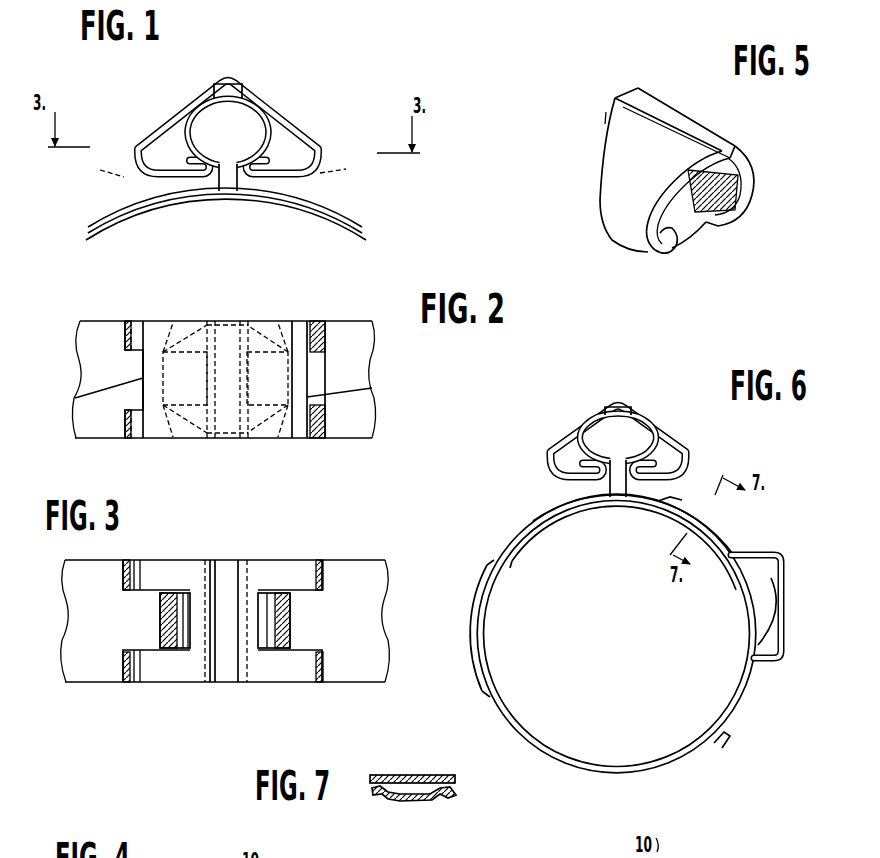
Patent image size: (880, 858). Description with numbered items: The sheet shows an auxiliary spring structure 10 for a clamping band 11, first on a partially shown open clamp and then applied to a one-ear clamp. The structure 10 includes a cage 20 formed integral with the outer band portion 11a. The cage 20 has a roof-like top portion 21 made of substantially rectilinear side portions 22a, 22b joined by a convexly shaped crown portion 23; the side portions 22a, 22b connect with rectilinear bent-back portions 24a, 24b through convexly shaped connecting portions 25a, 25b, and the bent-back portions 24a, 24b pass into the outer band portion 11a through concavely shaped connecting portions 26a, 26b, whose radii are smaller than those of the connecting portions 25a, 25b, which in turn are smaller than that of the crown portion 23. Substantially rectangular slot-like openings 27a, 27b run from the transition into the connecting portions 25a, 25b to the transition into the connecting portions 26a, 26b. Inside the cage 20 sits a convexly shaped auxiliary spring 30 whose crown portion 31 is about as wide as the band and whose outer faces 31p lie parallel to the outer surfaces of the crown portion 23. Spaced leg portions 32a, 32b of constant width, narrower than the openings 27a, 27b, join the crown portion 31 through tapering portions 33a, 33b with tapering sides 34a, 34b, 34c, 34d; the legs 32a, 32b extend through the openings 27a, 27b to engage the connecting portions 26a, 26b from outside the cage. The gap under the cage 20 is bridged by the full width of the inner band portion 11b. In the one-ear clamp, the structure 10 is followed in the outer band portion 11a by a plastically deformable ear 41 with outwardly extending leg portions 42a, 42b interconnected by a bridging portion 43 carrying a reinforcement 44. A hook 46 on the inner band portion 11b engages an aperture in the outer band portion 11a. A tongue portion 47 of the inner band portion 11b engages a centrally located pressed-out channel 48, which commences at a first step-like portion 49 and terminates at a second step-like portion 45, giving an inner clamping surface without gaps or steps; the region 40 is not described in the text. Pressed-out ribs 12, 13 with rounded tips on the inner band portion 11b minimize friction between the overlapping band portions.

In FIG. 1, the auxiliary spring structure 10 is at (294, 66).
In FIG. 6, the auxiliary spring structure 10 is at (673, 373).
In FIG. 6, the clamping band 11 is at (648, 767).
In FIG. 1, the outer band portion 11a is at (100, 213).
In FIG. 2, the outer band portion 11a is at (96, 347).
In FIG. 3, the outer band portion 11a is at (68, 615).
In FIG. 6, the outer band portion 11a is at (540, 497).
In FIG. 7, the outer band portion 11a is at (430, 750).
In FIG. 1, the inner band portion 11b is at (316, 221).
In FIG. 6, the inner band portion 11b is at (633, 503).
In FIG. 7, the inner band portion 11b is at (407, 802).
In FIG. 7, the pressed-out rib 12 is at (387, 797).
In FIG. 6, the pressed-out rib 13 is at (673, 493).
In FIG. 7, the pressed-out rib 13 is at (440, 797).
In FIG. 1, the cage 20 is at (304, 118).
In FIG. 6, the cage 20 is at (573, 422).
In FIG. 1, the roof-like top portion 21 is at (251, 67).
In FIG. 1, the rectilinear side portion 22a is at (171, 101).
In FIG. 2, the rectilinear side portion 22a is at (148, 328).
In FIG. 1, the rectilinear side portion 22b is at (289, 106).
In FIG. 2, the rectilinear side portion 22b is at (294, 328).
In FIG. 1, the crown portion 23 is at (247, 74).
In FIG. 1, the bent-back portion 24a is at (182, 197).
In FIG. 3, the bent-back portion 24a is at (200, 547).
In FIG. 1, the bent-back portion 24b is at (278, 197).
In FIG. 3, the bent-back portion 24b is at (297, 545).
In FIG. 1, the convexly shaped connecting portion 25a is at (131, 144).
In FIG. 2, the convexly shaped connecting portion 25a is at (121, 322).
In FIG. 3, the convexly shaped connecting portion 25a is at (125, 578).
In FIG. 1, the convexly shaped connecting portion 25b is at (325, 148).
In FIG. 2, the convexly shaped connecting portion 25b is at (325, 327).
In FIG. 3, the convexly shaped connecting portion 25b is at (322, 582).
In FIG. 1, the concavely shaped connecting portion 26a is at (222, 190).
In FIG. 2, the concavely shaped connecting portion 26a is at (218, 322).
In FIG. 3, the concavely shaped connecting portion 26a is at (218, 562).
In FIG. 1, the concavely shaped connecting portion 26b is at (235, 192).
In FIG. 2, the concavely shaped connecting portion 26b is at (240, 322).
In FIG. 3, the concavely shaped connecting portion 26b is at (235, 562).
In FIG. 1, the slot-like opening 27a is at (103, 168).
In FIG. 2, the slot-like opening 27a is at (78, 398).
In FIG. 3, the slot-like opening 27a is at (152, 590).
In FIG. 1, the slot-like opening 27b is at (348, 166).
In FIG. 2, the slot-like opening 27b is at (372, 390).
In FIG. 3, the slot-like opening 27b is at (300, 590).
In FIG. 1, the auxiliary spring 30 is at (259, 98).
In FIG. 5, the auxiliary spring 30 is at (688, 60).
In FIG. 6, the auxiliary spring 30 is at (597, 432).
In FIG. 1, the crown portion 31 is at (222, 89).
In FIG. 5, the crown portion 31 is at (694, 118).
In FIG. 5, the outer face of the crown portion 31p is at (625, 92).
In FIG. 3, the leg portion 32a is at (185, 637).
In FIG. 5, the leg portion 32a is at (680, 235).
In FIG. 3, the leg portion 32b is at (267, 637).
In FIG. 5, the leg portion 32b is at (722, 223).
In FIG. 5, the tapering portion 33a is at (627, 160).
In FIG. 5, the tapering portion 33b is at (757, 178).
In FIG. 1, the tapering side 34a is at (183, 115).
In FIG. 2, the tapering side 34a is at (168, 441).
In FIG. 5, the tapering side 34a is at (687, 205).
In FIG. 1, the tapering side 34b is at (262, 112).
In FIG. 2, the tapering side 34b is at (265, 440).
In FIG. 5, the tapering side 34b is at (745, 172).
In FIG. 2, the tapering side 34c is at (177, 322).
In FIG. 5, the tapering side 34c is at (600, 142).
In FIG. 2, the tapering side 34d is at (270, 325).
In FIG. 6, the connector clip 40 is at (493, 527).
In FIG. 6, the ear 41 is at (787, 568).
In FIG. 6, the leg portion 42a is at (765, 549).
In FIG. 6, the leg portion 42b is at (780, 661).
In FIG. 6, the bridging portion 43 is at (790, 600).
In FIG. 6, the reinforcement 44 is at (773, 605).
In FIG. 6, the second step-like portion 45 is at (488, 692).
In FIG. 6, the hook 46 is at (730, 733).
In FIG. 6, the tongue portion 47 is at (512, 565).
In FIG. 6, the pressed-out channel 48 is at (473, 637).
In FIG. 6, the first step-like portion 49 is at (483, 560).